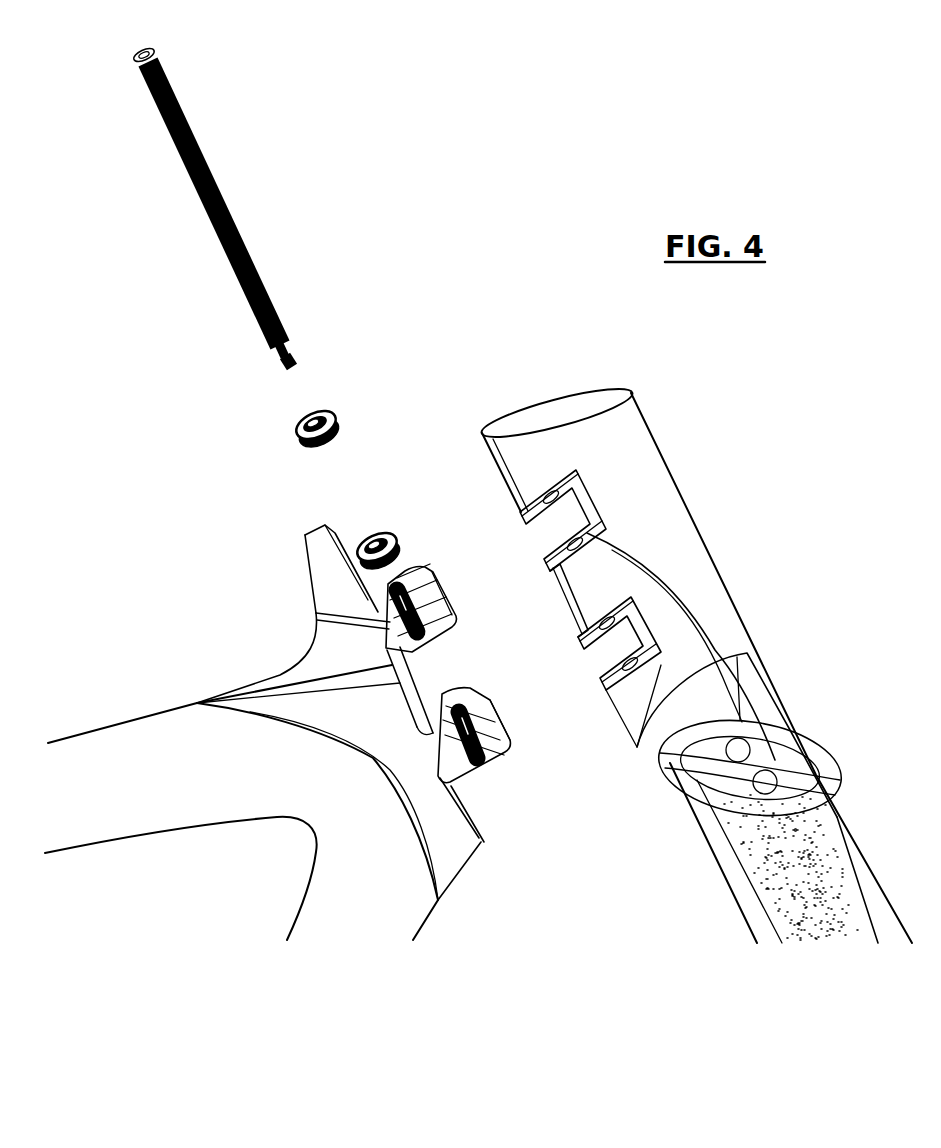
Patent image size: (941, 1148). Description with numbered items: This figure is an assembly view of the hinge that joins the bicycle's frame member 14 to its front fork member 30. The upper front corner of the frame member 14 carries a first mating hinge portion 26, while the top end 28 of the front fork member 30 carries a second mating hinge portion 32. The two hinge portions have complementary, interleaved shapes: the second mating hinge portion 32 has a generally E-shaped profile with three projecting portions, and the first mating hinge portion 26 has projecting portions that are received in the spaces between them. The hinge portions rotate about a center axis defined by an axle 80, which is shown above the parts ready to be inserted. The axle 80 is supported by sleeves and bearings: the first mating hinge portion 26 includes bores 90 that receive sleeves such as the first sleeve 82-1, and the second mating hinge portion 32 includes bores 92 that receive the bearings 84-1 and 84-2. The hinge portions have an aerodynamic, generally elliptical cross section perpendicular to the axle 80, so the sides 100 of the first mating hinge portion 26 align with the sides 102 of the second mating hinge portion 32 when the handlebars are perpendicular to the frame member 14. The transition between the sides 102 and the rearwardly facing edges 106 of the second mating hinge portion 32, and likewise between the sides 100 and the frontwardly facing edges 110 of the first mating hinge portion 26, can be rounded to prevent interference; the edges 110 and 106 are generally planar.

The frame member 14 is at (100, 727).
The first mating hinge portion 26 is at (328, 637).
The top end 28 is at (695, 661).
The front fork member 30 is at (840, 817).
The second mating hinge portion 32 is at (697, 583).
The axle 80 is at (279, 317).
The first sleeve 82-1 is at (440, 594).
The bearing 84-1 is at (338, 421).
The bearing 84-2 is at (397, 543).
The bores 90 is at (475, 656).
The bores 92 is at (551, 518).
The sides 100 is at (327, 570).
The sides 102 is at (630, 423).
The rearwardly facing edges 106 is at (553, 600).
The frontwardly facing edges 110 is at (503, 722).